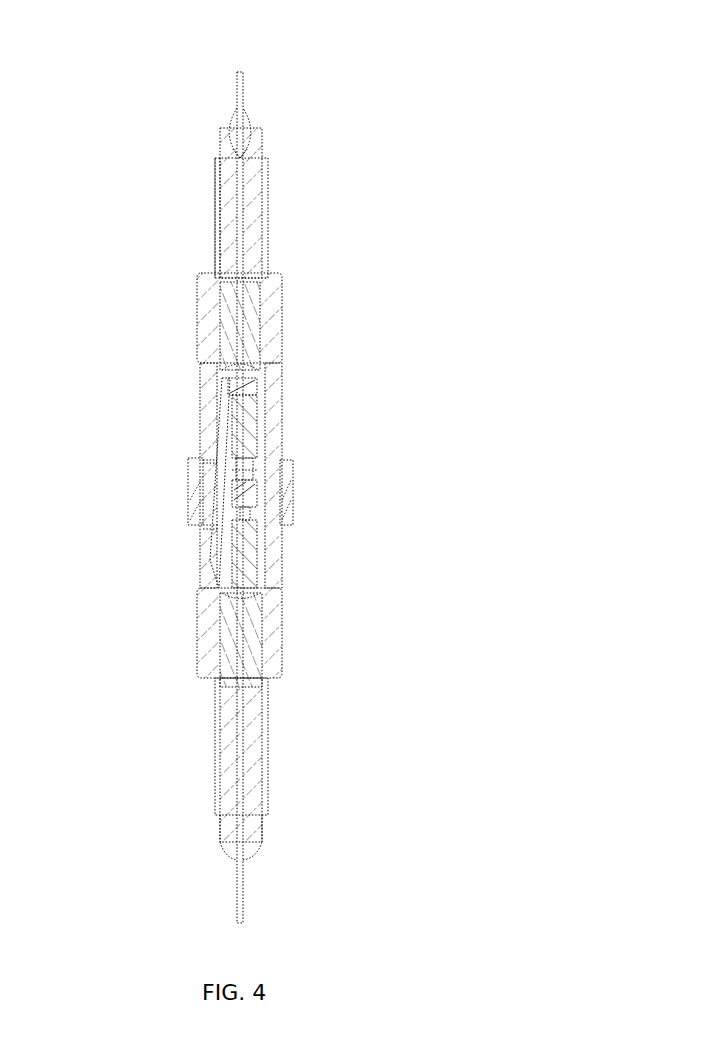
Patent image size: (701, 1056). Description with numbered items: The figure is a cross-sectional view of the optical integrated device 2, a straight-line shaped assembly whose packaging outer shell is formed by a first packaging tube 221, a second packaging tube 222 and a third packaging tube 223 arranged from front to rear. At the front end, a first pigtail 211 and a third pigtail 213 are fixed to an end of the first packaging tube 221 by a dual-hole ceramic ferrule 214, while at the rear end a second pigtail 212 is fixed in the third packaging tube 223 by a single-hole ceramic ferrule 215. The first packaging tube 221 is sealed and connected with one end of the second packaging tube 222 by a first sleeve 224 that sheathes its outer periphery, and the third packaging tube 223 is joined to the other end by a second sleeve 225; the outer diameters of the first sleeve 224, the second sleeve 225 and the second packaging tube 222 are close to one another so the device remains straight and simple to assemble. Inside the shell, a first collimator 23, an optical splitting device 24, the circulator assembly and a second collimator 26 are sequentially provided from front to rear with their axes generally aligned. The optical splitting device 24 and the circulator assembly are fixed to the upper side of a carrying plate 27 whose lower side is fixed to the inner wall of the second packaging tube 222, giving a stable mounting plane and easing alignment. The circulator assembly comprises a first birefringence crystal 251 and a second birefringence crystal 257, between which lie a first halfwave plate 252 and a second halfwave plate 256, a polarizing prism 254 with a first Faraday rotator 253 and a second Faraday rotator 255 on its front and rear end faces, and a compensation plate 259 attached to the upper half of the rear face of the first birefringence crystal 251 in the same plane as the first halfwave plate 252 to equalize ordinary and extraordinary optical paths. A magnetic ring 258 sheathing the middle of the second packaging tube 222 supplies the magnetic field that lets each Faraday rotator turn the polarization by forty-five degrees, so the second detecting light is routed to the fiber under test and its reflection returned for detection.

The optical integrated device 2 is at (387, 66).
The third pigtail 213 is at (235, 170).
The first pigtail 211 is at (262, 163).
The first packaging tube 221 is at (268, 215).
The dual-hole ceramic ferrule 214 is at (215, 232).
The first sleeve 224 is at (197, 325).
The first collimator 23 is at (262, 335).
The second packaging tube 222 is at (202, 395).
The carrying plate 27 is at (222, 432).
The optical splitting device 24 is at (257, 385).
The first birefringence crystal 251 is at (258, 425).
The compensation plate 259 is at (258, 460).
The first Faraday rotator 253 is at (258, 485).
The second Faraday rotator 255 is at (262, 517).
The second birefringence crystal 257 is at (258, 575).
The magnetic ring 258 is at (190, 487).
The polarizing prism 254 is at (292, 495).
The first halfwave plate 252 is at (205, 460).
The second halfwave plate 256 is at (213, 532).
The second sleeve 225 is at (282, 625).
The second collimator 26 is at (220, 632).
The third packaging tube 223 is at (268, 720).
The single-hole ceramic ferrule 215 is at (225, 705).
The second pigtail 212 is at (222, 790).